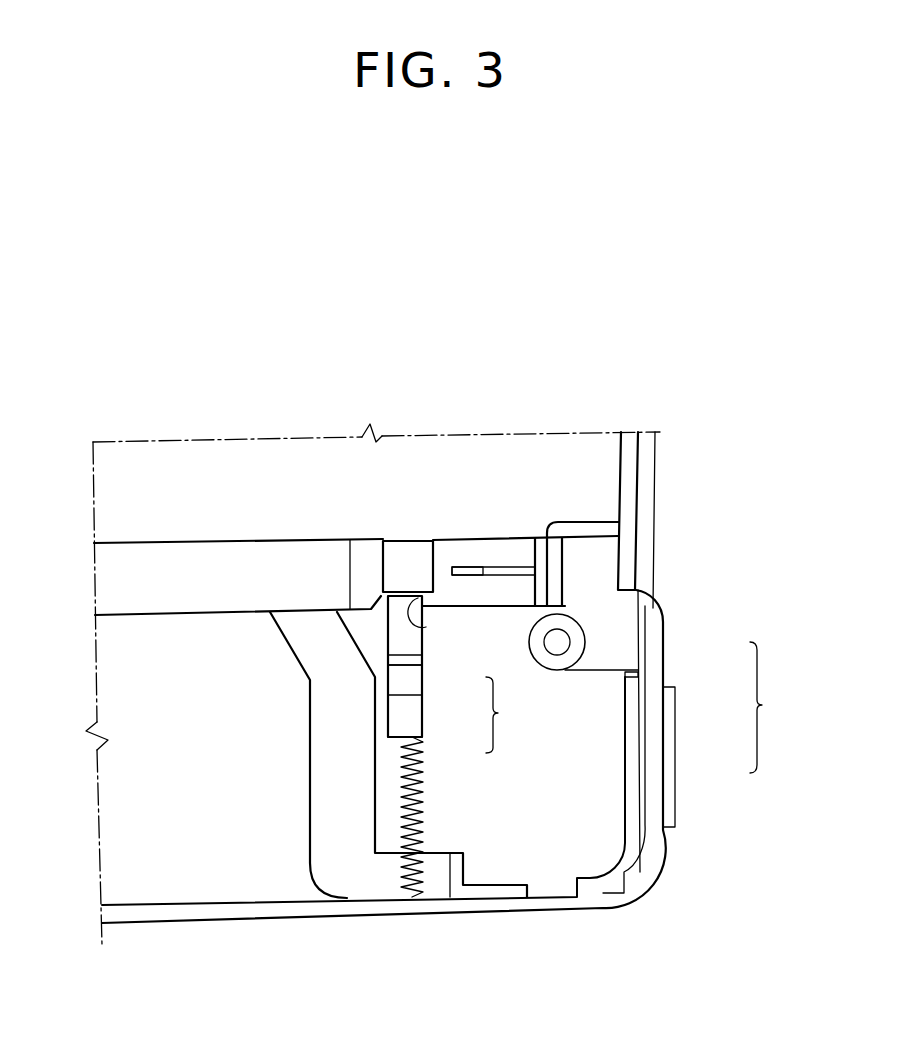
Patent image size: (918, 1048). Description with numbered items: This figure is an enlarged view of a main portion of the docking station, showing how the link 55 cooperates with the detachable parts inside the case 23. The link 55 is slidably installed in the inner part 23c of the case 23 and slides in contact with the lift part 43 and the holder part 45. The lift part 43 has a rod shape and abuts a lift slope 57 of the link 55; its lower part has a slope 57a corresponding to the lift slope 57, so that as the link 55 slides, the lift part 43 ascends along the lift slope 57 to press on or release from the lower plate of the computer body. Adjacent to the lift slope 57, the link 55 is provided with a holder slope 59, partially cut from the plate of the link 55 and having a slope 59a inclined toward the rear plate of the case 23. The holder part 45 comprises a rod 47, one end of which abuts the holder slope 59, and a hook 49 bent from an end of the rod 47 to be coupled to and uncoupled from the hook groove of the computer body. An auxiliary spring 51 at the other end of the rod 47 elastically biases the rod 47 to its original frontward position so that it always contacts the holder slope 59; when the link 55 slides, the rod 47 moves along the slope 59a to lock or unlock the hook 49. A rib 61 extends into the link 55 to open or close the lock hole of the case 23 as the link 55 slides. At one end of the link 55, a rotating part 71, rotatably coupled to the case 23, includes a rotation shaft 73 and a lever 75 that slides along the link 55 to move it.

The case 23 is at (664, 482).
The inner part 23c is at (560, 437).
The lift part 43 is at (400, 547).
The holder part 45 is at (505, 724).
The rod 47 is at (423, 652).
The hook 49 is at (423, 687).
The auxiliary spring 51 is at (417, 752).
The link 55 is at (240, 560).
The lift slope 57 is at (503, 558).
The slope 57a is at (466, 569).
The holder slope 59 is at (376, 587).
The slope 59a is at (417, 622).
The rib 61 is at (312, 813).
The rotating part 71 is at (768, 716).
The rotation shaft 73 is at (557, 642).
The lever 75 is at (655, 780).